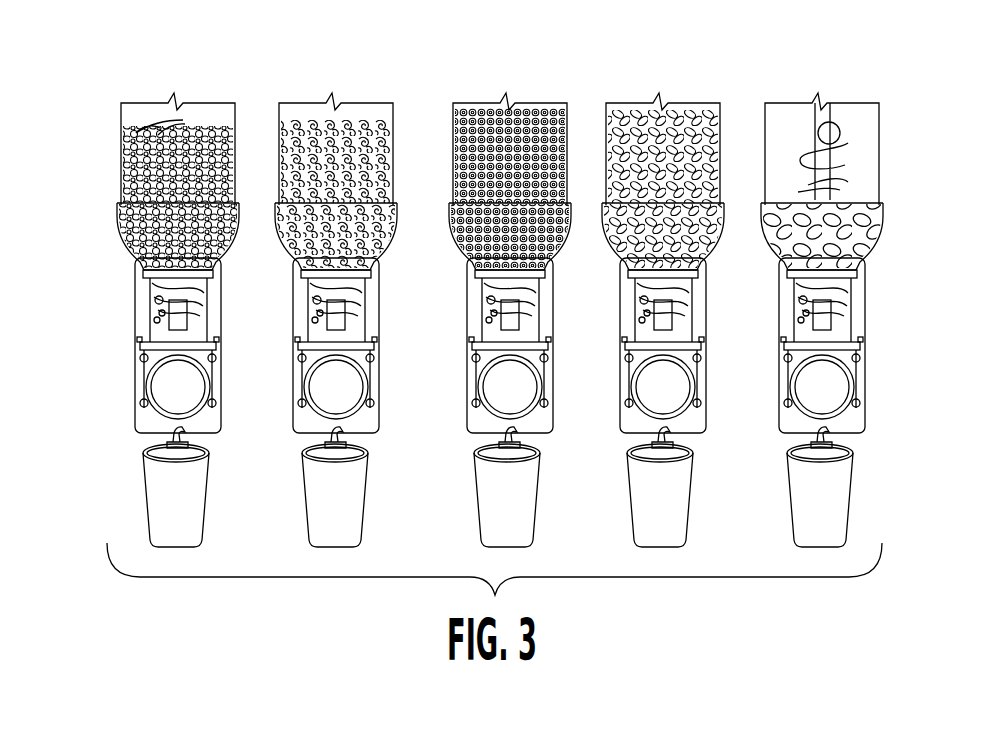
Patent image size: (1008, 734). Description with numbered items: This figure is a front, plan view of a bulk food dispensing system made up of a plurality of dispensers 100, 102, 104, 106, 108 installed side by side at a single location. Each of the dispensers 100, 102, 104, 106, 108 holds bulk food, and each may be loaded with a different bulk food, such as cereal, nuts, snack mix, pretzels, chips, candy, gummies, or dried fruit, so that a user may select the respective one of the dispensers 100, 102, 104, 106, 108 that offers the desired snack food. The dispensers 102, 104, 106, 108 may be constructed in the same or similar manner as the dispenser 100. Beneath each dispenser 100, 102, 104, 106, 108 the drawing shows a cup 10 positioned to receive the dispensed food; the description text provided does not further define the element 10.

The dispenser 100 is at (128, 128).
The dispenser 102 is at (283, 117).
The dispenser 104 is at (452, 118).
The dispenser 106 is at (606, 118).
The dispenser 108 is at (767, 118).
The cup 10 is at (155, 498).